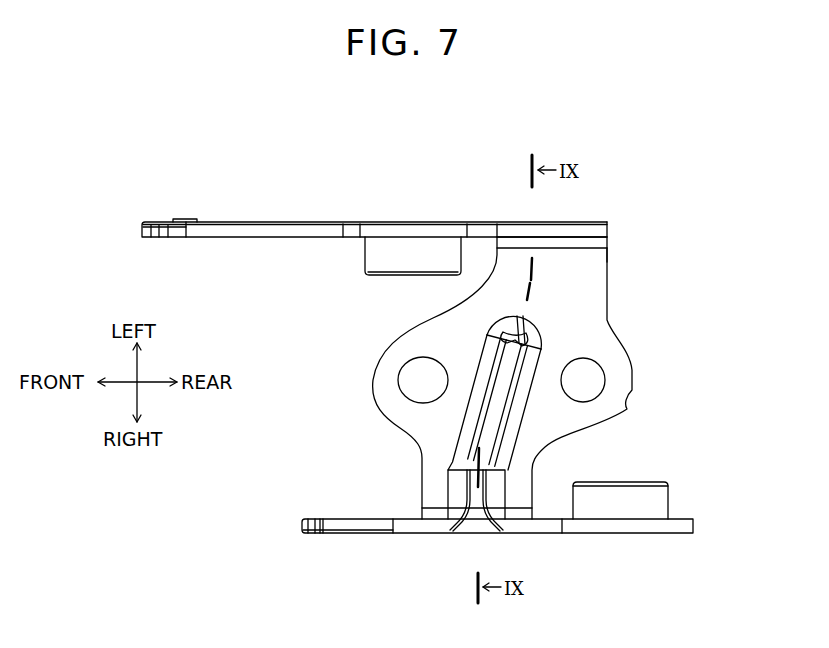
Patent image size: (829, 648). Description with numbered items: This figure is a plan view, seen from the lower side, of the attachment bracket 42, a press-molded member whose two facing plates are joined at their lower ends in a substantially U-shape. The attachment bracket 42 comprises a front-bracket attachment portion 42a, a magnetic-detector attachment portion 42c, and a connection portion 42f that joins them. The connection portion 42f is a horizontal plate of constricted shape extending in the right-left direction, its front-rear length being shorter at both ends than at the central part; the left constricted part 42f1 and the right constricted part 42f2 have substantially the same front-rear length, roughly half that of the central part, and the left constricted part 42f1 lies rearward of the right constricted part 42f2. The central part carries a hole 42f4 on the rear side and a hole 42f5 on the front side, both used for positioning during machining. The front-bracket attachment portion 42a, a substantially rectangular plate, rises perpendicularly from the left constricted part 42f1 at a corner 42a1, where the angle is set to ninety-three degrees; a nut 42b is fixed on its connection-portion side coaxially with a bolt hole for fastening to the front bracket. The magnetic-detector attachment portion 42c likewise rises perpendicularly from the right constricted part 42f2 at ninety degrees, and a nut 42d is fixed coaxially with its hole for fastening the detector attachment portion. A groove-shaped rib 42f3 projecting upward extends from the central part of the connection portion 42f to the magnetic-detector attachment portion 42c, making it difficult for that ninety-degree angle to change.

The attachment bracket 42 is at (354, 173).
The front-bracket attachment portion 42a is at (260, 219).
The corner 42a1 is at (553, 223).
The nut 42b is at (366, 255).
The magnetic-detector attachment portion 42c is at (360, 535).
The nut 42d is at (658, 502).
The connection portion 42f is at (607, 321).
The left constricted part 42f1 is at (607, 261).
The right constricted part 42f2 is at (420, 482).
The rib 42f3 is at (495, 398).
The hole 42f4 is at (583, 401).
The hole 42f5 is at (415, 366).